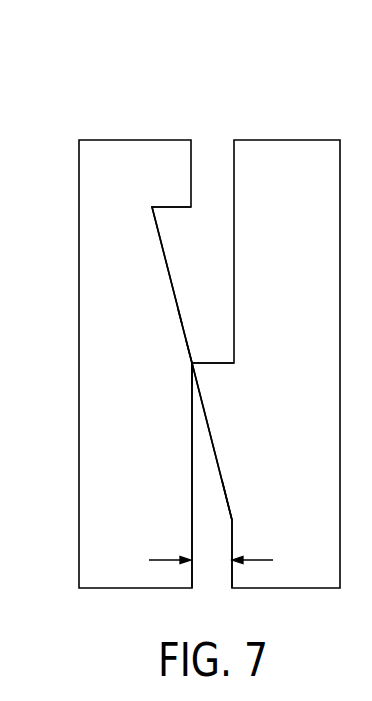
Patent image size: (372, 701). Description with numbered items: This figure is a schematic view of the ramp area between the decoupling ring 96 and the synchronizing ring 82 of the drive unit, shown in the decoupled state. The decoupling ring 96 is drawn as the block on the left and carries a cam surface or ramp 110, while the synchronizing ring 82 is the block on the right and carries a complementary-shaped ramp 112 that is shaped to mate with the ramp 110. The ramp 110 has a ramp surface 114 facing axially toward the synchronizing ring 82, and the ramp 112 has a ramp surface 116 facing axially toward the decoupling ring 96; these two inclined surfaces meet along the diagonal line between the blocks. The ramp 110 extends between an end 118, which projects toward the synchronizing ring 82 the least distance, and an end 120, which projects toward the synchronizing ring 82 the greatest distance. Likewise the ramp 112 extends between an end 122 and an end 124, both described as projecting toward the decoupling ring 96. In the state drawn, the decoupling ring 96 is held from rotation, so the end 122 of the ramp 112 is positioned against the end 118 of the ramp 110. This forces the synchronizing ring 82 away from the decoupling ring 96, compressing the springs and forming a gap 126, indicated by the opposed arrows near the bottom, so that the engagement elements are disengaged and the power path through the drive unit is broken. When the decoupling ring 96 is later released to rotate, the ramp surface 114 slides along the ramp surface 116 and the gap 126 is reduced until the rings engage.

The decoupling ring 96 is at (136, 140).
The synchronizing ring 82 is at (288, 140).
The end 118 is at (154, 209).
The ramp 110 is at (174, 298).
The ramp surface 114 is at (184, 335).
The end 120 is at (192, 363).
The end 122 is at (192, 363).
The ramp 112 is at (212, 445).
The ramp surface 116 is at (218, 466).
The end 124 is at (232, 520).
The gap 126 is at (262, 562).